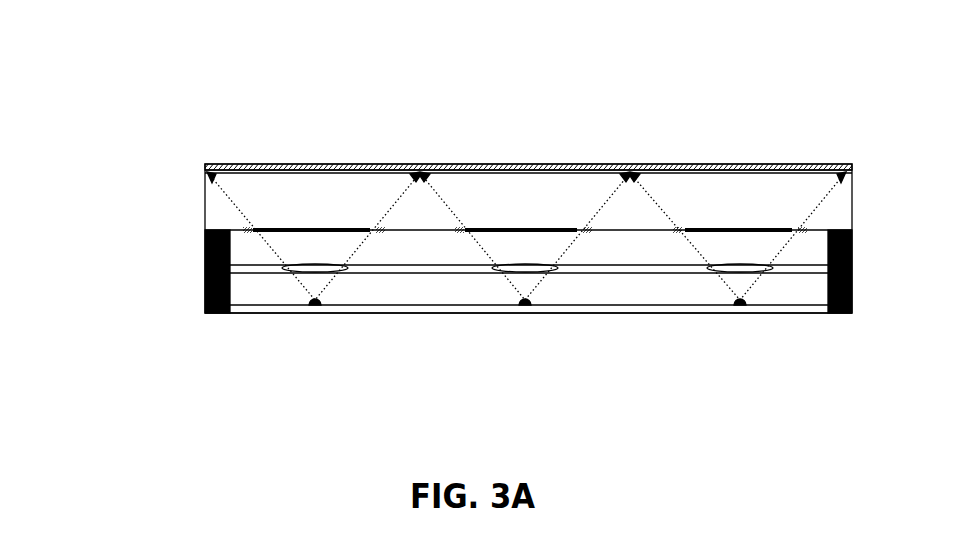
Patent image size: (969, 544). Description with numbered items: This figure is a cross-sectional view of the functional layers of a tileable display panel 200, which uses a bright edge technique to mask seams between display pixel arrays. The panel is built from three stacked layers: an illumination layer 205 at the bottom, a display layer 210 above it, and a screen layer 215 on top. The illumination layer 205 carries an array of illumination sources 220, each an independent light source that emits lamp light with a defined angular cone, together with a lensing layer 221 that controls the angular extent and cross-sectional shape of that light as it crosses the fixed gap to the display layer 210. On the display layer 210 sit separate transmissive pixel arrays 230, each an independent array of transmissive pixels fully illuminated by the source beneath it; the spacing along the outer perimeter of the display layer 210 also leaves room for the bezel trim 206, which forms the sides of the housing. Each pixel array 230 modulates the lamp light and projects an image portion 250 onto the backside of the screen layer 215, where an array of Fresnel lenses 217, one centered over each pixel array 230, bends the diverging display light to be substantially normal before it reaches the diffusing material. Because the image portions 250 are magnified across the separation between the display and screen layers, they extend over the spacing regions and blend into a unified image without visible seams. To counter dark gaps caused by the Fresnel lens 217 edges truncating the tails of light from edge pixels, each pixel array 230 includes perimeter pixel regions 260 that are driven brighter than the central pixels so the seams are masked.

The tileable display panel 200 is at (204, 74).
The illumination layer 205 is at (193, 240).
The bezel trim 206 is at (842, 317).
The display layer 210 is at (191, 230).
The screen layer 215 is at (193, 215).
The Fresnel lens 217 is at (240, 166).
The illumination source 220 is at (780, 355).
The lensing layer 221 is at (268, 274).
The transmissive pixel array 230 is at (727, 228).
The image portion 250 is at (850, 155).
The perimeter pixel region 260 is at (381, 234).